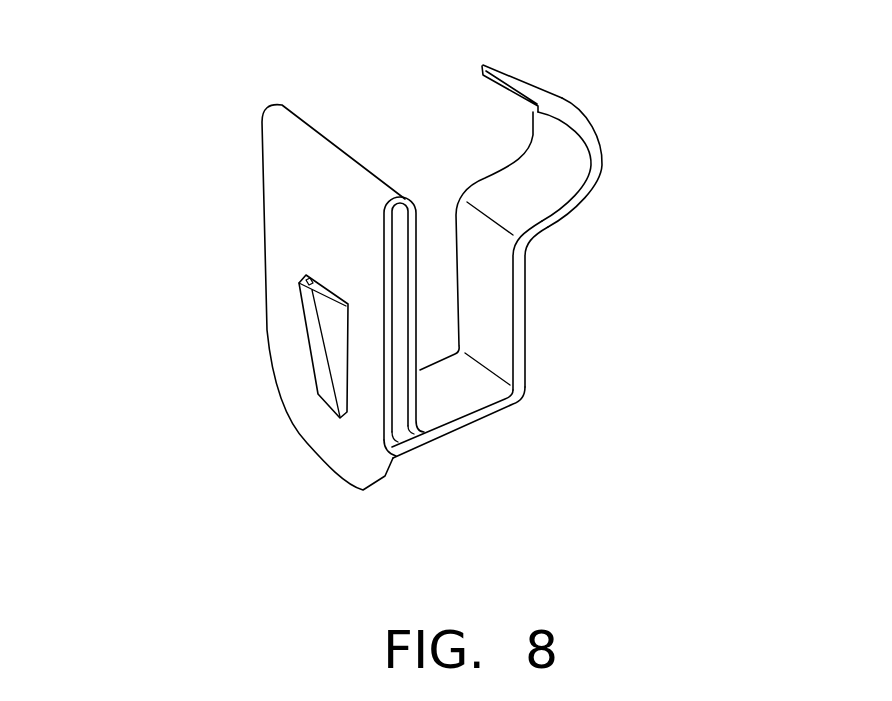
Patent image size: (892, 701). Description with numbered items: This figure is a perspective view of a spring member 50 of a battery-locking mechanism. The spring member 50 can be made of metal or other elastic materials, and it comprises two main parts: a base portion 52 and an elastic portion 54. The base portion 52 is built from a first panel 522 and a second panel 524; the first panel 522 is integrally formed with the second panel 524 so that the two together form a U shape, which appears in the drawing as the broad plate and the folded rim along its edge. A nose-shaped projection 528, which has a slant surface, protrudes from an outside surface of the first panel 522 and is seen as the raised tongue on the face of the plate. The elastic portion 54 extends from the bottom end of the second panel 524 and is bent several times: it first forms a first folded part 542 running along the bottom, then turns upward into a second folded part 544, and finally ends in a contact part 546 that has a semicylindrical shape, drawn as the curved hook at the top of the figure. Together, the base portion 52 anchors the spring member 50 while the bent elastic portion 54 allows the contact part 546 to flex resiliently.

The spring member 50 is at (372, 101).
The base portion 52 is at (97, 247).
The first panel 522 is at (280, 285).
The second panel 524 is at (410, 247).
The nose-shaped projection 528 is at (318, 340).
The elastic portion 54 is at (732, 153).
The first folded part 542 is at (525, 393).
The second folded part 544 is at (525, 243).
The contact part 546 is at (598, 161).